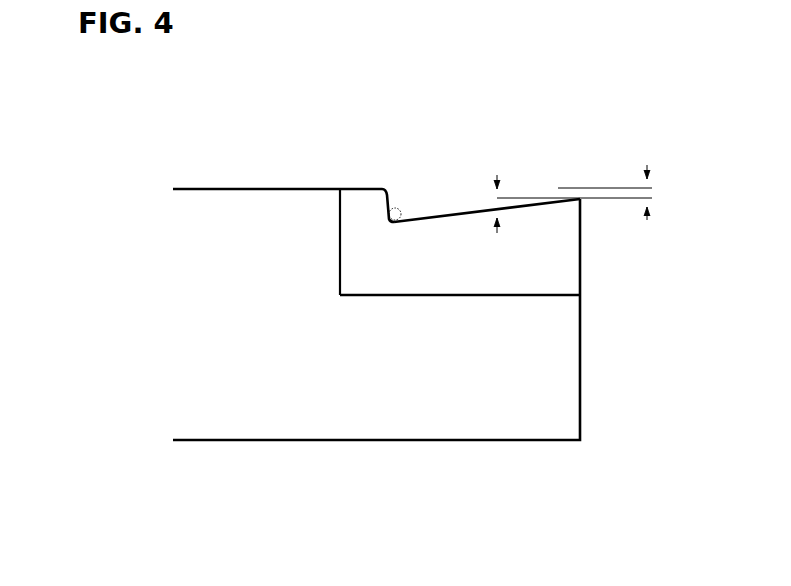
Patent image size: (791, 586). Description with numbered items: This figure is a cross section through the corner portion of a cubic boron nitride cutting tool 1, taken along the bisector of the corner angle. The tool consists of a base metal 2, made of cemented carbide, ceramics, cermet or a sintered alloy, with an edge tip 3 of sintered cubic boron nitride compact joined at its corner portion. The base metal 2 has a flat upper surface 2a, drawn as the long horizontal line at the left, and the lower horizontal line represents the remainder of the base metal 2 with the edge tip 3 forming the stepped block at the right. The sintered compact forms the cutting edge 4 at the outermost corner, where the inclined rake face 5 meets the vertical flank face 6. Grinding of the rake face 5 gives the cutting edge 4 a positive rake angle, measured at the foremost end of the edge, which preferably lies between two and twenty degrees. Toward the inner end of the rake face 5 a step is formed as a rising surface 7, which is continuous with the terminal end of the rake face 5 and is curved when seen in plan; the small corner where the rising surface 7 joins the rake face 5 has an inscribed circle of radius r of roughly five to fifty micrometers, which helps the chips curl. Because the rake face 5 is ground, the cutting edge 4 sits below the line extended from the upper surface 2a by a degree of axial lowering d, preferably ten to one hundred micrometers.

The cubic boron nitride cutting tool 1 is at (291, 184).
The base metal 2 is at (507, 423).
The upper surface of the base metal 2a is at (226, 189).
The edge tip 3 is at (496, 273).
The cutting edge 4 is at (581, 200).
The rake face 5 is at (530, 204).
The flank face 6 is at (581, 272).
The rising surface 7 is at (392, 203).
The radius of inscribed circle r is at (392, 218).
The degree of axial lowering d is at (652, 193).